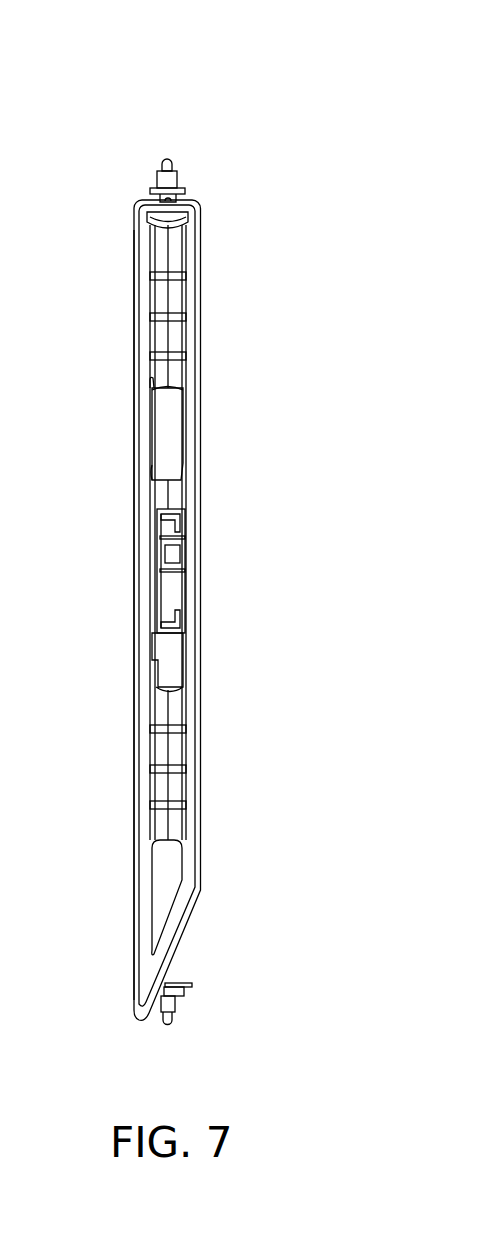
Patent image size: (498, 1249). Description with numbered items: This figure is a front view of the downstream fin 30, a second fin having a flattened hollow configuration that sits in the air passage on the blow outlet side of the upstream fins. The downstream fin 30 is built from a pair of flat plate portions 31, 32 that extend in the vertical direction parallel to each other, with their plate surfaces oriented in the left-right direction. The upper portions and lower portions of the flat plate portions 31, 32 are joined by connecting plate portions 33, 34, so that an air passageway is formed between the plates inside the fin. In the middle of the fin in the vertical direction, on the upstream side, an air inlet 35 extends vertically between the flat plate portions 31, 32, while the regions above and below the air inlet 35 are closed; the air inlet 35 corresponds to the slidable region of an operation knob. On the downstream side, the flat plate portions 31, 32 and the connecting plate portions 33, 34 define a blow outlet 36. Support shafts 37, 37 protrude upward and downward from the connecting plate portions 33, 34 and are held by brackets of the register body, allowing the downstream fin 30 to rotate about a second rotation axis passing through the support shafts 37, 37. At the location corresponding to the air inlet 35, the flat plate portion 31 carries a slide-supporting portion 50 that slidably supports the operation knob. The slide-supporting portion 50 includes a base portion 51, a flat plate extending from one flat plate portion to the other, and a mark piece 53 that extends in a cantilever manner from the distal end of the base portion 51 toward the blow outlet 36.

The downstream fin 30 is at (253, 183).
The flat plate portion 31 is at (197, 248).
The flat plate portion 32 is at (137, 264).
The connecting plate portion 33 is at (147, 203).
The connecting plate portion 34 is at (188, 937).
The air inlet 35 is at (170, 428).
The blow outlet 36 is at (195, 466).
The support shaft 37 is at (173, 168).
The slide-supporting portion 50 is at (189, 596).
The base portion 51 is at (157, 510).
The mark piece 53 is at (172, 634).